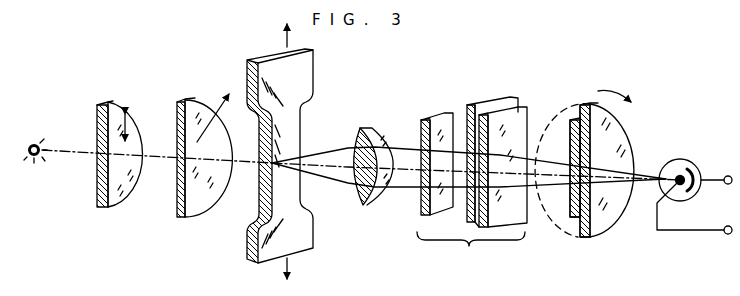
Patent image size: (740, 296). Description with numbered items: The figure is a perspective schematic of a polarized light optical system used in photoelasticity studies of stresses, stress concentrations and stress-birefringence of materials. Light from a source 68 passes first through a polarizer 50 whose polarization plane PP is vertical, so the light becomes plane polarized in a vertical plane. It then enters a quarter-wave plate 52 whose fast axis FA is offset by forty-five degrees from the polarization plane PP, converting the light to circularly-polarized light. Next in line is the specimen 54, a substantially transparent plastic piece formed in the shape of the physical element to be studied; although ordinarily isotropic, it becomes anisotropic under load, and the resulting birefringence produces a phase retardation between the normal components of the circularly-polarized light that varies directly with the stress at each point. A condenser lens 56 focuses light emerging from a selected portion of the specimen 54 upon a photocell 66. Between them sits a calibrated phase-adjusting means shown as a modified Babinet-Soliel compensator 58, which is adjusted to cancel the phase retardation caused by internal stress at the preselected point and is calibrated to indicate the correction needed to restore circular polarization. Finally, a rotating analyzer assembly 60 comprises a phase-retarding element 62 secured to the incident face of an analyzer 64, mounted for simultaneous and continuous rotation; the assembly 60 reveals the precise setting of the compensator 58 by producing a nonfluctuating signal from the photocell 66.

The polarizer 50 is at (97, 123).
The quarter-wave plate 52 is at (177, 117).
The specimen 54 is at (313, 74).
The condenser lens 56 is at (362, 128).
The modified Babinet-Soliel compensator 58 is at (472, 182).
The rotating analyzer assembly 60 is at (642, 119).
The phase-retarding element 62 is at (572, 132).
The analyzer 64 is at (617, 208).
The photocell 66 is at (670, 159).
The light source 68 is at (34, 143).
The polarization plane PP is at (140, 127).
The fast axis FA is at (214, 106).